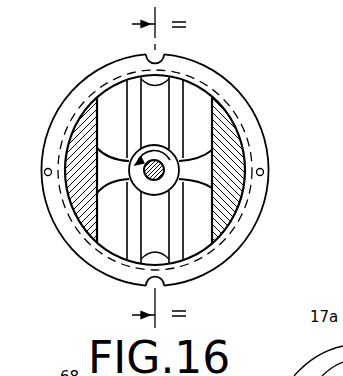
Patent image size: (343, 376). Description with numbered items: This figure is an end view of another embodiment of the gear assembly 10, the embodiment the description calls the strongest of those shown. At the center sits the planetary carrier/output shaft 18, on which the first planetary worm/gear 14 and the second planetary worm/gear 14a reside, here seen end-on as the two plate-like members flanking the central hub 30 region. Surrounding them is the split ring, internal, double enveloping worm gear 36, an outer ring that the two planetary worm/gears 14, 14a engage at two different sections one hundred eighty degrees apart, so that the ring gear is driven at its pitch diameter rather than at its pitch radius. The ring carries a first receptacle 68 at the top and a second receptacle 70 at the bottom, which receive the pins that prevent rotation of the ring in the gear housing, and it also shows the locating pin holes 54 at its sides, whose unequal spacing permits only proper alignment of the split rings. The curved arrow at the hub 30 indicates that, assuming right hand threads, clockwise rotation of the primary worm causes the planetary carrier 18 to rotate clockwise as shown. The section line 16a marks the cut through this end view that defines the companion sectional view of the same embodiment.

The gear assembly 10 is at (273, 186).
The first planetary worm/gear 14 is at (191, 238).
The second planetary worm/gear 14a is at (197, 100).
The section line 16a- 16a is at (141, 167).
The planetary carrier/output shaft 18 is at (90, 213).
The hub and shaft 30 is at (165, 170).
The split ring, internal, double enveloping worm gear 36 is at (244, 116).
The locating pin holes 54 is at (262, 178).
The first receptacle 68 is at (153, 56).
The second receptacle 70 is at (160, 288).